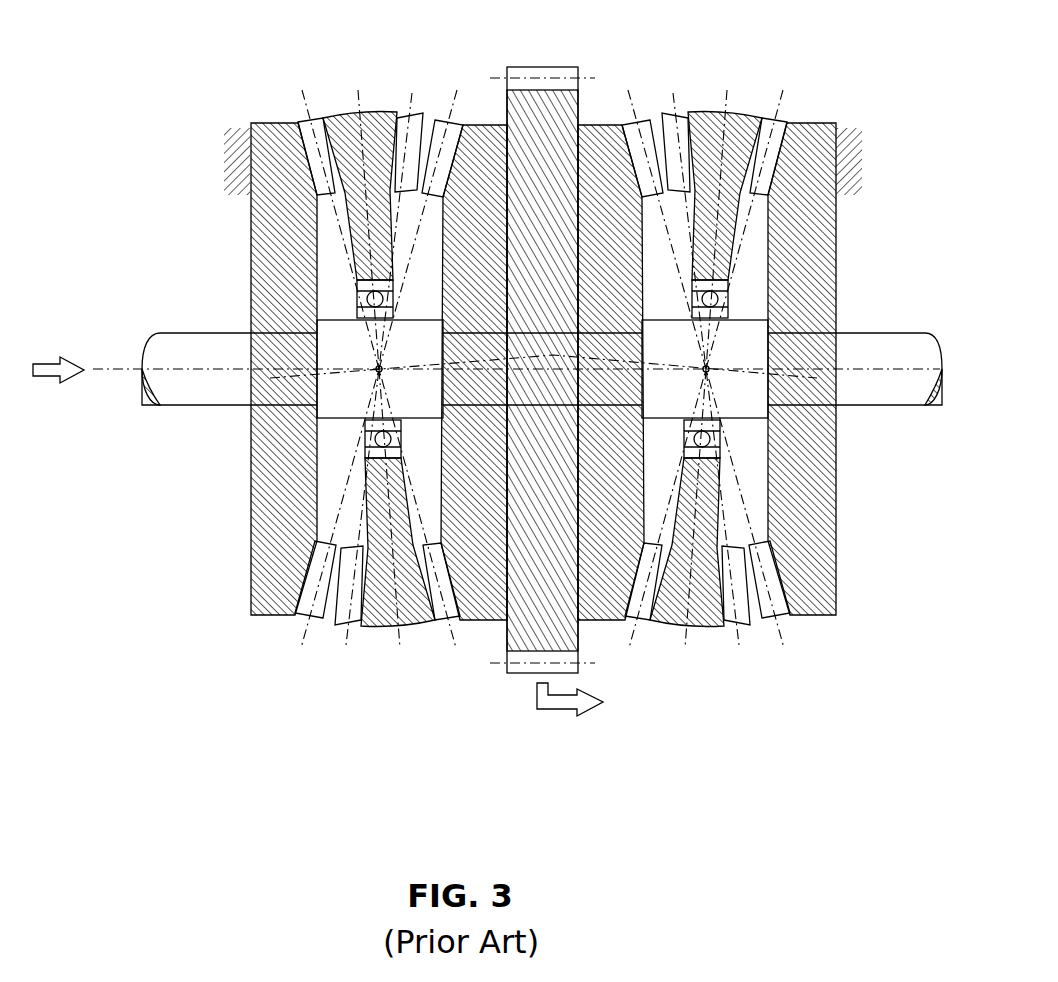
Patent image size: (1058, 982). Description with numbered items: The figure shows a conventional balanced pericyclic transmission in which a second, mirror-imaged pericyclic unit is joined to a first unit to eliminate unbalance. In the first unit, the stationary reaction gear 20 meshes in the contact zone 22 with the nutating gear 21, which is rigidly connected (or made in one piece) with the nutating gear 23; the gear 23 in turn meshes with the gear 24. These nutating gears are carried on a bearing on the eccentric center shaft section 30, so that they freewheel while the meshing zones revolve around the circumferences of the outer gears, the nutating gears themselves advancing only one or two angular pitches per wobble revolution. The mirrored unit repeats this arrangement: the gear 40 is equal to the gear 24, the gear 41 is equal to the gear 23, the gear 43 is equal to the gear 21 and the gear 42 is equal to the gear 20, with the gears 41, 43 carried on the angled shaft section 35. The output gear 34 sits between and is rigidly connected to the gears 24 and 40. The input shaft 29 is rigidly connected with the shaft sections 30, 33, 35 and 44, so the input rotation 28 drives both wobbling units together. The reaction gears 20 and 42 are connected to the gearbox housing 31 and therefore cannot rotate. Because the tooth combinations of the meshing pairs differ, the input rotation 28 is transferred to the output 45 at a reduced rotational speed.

The gear 20 is at (255, 229).
The gear 21 is at (333, 118).
The zone 22 is at (300, 120).
The gear 23 is at (385, 115).
The gear 24 is at (485, 155).
The input rotation 28 is at (62, 374).
The input shaft 29 is at (198, 382).
The center shaft section 30 is at (337, 408).
The gearbox housing 31 is at (228, 157).
The shaft section 33 is at (542, 369).
The output gear 34 is at (537, 105).
The shaft section 35 is at (742, 402).
The gear 40 is at (590, 137).
The gear 41 is at (693, 120).
The gear 42 is at (800, 245).
The gear 43 is at (746, 120).
The shaft section 44 is at (875, 383).
The output 45 is at (609, 708).